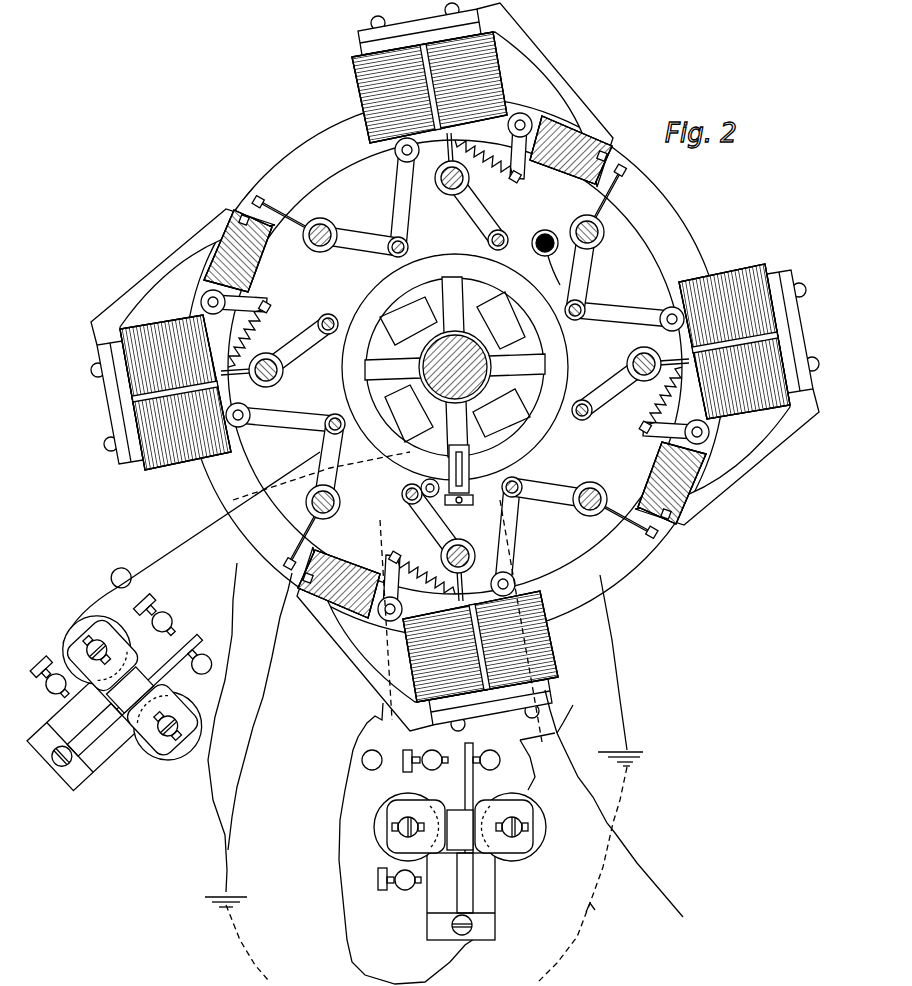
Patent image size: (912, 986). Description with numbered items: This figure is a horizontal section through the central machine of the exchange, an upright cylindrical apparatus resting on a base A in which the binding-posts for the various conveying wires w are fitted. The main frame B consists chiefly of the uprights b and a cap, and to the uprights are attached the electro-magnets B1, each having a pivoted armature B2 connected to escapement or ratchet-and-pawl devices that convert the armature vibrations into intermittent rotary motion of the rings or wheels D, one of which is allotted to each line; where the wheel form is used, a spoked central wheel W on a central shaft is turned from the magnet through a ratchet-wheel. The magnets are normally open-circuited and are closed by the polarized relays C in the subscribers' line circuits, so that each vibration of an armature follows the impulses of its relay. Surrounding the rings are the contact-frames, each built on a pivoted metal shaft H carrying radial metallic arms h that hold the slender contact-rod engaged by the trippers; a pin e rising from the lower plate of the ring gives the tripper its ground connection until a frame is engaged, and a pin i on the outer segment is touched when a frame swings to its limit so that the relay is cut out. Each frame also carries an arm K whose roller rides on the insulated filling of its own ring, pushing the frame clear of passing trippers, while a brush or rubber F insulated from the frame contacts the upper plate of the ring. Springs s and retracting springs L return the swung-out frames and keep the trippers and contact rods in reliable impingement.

The base A is at (455, 367).
The main frame B is at (455, 367).
The electro-magnet B1 is at (455, 367).
The pivoted armature B2 is at (455, 367).
The upright b is at (455, 367).
The spring s is at (455, 367).
The radial metallic arm h is at (455, 367).
The arm K is at (455, 367).
The pivoted metal bar or shaft H is at (456, 378).
The ring or wheel D is at (587, 360).
The pin i is at (456, 349).
The central wheel W is at (455, 367).
The brush or rubber F is at (546, 261).
The bent metal pin, stud, or block e is at (452, 475).
The wires w is at (426, 717).
The spring L is at (373, 718).
The relay C is at (298, 749).